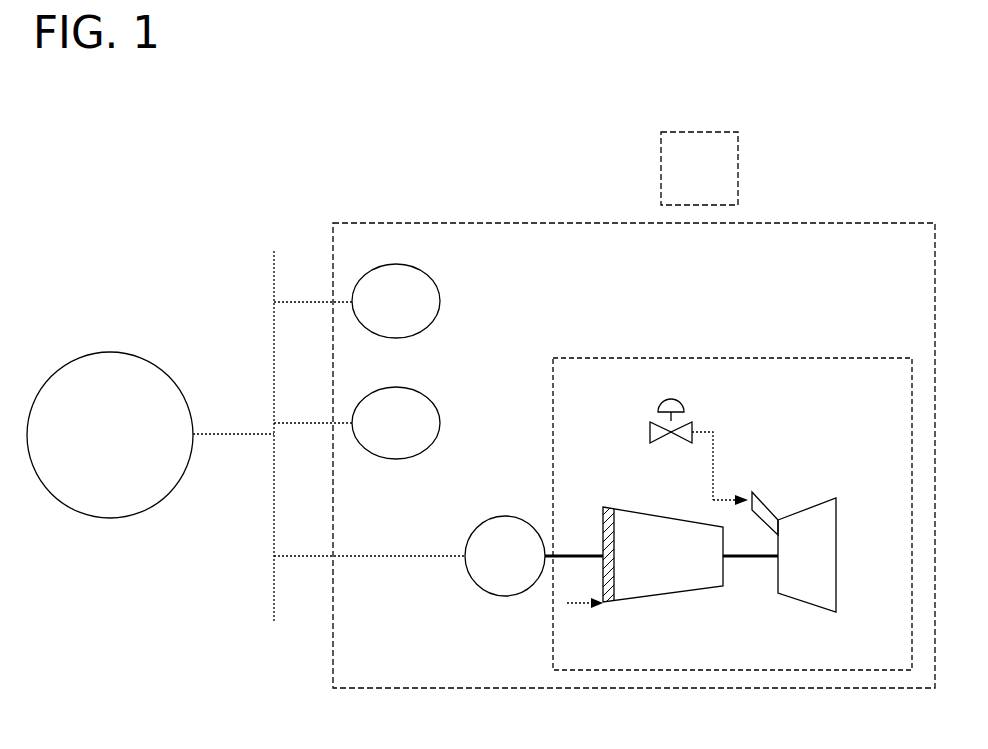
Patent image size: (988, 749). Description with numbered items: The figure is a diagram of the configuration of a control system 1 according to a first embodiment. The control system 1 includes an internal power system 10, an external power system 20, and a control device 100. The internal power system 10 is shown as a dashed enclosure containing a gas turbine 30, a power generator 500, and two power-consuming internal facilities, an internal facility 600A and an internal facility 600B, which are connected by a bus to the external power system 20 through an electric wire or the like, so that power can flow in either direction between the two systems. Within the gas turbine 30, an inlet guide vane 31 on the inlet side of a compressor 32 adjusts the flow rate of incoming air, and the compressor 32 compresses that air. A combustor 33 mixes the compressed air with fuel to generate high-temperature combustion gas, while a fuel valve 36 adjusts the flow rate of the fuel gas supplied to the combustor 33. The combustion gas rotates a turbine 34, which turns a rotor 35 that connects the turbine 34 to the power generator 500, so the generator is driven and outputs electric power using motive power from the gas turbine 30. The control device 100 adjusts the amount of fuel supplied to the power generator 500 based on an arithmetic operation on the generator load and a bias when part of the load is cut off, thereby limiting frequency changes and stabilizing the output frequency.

The control system 1 is at (498, 138).
The internal power system 10 is at (837, 222).
The external power system 20 is at (128, 352).
The gas turbine 30 is at (762, 358).
The inlet guide vane 31 is at (603, 506).
The compressor 32 is at (672, 595).
The combustor 33 is at (772, 502).
The turbine 34 is at (836, 553).
The rotor 35 is at (747, 560).
The fuel valve 36 is at (692, 428).
The control device 100 is at (699, 132).
The power generator 500 is at (503, 597).
The internal facility 600A is at (440, 301).
The internal facility 600B is at (440, 423).